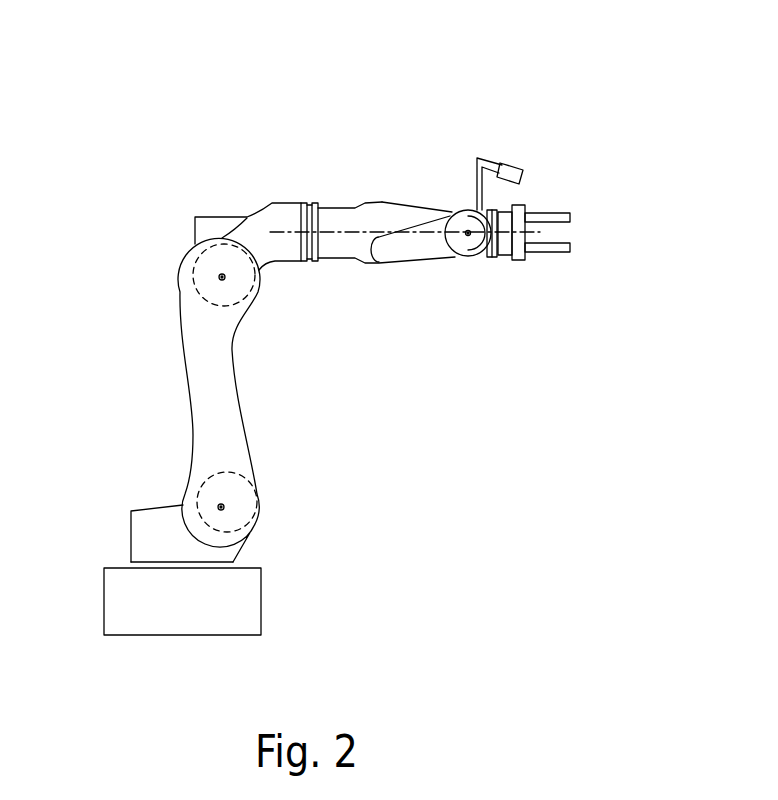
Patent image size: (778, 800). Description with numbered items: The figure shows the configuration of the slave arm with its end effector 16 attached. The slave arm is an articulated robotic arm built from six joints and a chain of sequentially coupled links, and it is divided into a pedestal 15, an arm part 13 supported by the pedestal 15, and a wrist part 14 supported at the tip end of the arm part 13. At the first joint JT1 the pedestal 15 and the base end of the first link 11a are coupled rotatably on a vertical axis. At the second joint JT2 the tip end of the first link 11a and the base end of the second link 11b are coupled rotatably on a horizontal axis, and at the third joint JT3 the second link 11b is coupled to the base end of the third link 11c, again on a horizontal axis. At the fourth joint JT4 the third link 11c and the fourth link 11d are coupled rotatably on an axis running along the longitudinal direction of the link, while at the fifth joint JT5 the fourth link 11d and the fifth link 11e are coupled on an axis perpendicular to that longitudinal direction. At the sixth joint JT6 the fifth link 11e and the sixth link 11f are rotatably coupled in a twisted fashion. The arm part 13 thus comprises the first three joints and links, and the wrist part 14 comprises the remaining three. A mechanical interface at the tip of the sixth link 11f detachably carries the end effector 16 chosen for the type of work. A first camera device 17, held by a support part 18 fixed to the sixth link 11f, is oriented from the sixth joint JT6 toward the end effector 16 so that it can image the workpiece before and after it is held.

The arm part 13 is at (177, 313).
The pedestal 15 is at (104, 580).
The first link 11a is at (138, 510).
The second link 11b is at (183, 360).
The third link 11c is at (267, 205).
The fourth link 11d is at (382, 203).
The fifth link 11e is at (488, 207).
The sixth link 11f is at (513, 262).
The wrist part 14 is at (417, 204).
The end effector 16 is at (547, 253).
The first camera device 17 is at (519, 165).
The support part 18 is at (486, 157).
The first joint JT1 is at (233, 565).
The second joint JT2 is at (230, 504).
The third joint JT3 is at (197, 259).
The fourth joint JT4 is at (307, 203).
The fifth joint JT5 is at (466, 209).
The sixth joint JT6 is at (501, 210).